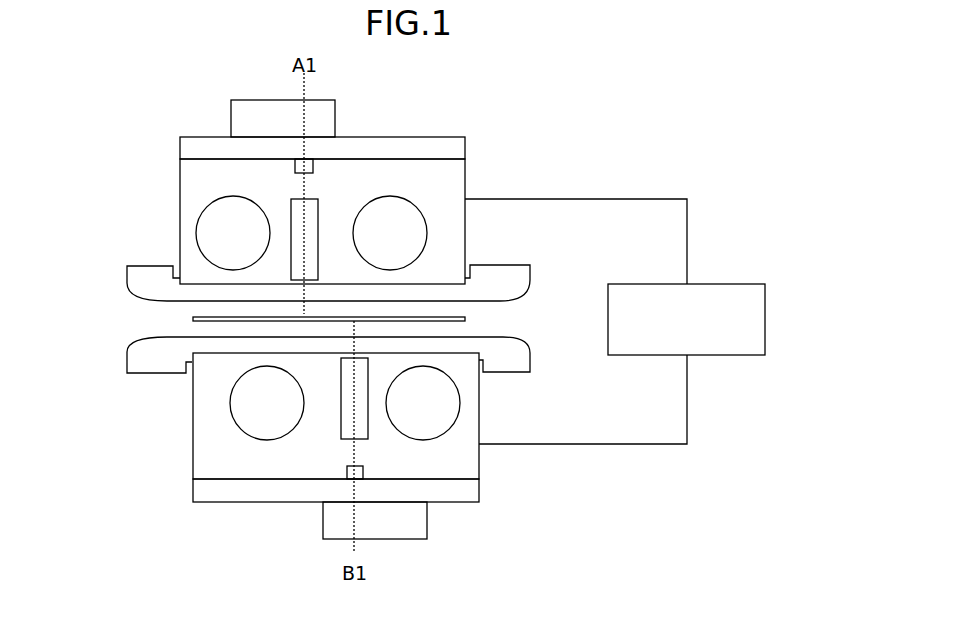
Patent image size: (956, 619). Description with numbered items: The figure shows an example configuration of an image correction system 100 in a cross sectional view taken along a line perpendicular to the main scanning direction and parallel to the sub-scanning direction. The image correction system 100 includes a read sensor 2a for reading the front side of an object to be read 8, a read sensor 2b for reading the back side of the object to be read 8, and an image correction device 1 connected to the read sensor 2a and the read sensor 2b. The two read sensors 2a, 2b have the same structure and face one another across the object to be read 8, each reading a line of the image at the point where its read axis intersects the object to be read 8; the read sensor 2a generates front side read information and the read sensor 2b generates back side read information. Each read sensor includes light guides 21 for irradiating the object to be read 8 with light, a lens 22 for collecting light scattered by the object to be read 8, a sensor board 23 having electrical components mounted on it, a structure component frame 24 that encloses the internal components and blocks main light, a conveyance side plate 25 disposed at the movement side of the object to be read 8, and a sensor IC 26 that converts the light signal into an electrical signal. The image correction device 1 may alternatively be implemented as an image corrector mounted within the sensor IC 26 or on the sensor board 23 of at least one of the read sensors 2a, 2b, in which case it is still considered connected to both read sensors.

The image correction system 100 is at (578, 108).
The image correction device 1 is at (765, 317).
The read sensor 2a is at (250, 99).
The read sensor 2b is at (415, 540).
The object to be read 8 is at (193, 318).
The light guides 21 is at (415, 222).
The lens 22 is at (314, 228).
The sensor board 23 is at (193, 147).
The structure component frame 24 is at (193, 190).
The conveyance side plate 25 is at (507, 270).
The sensor IC 26 is at (313, 160).